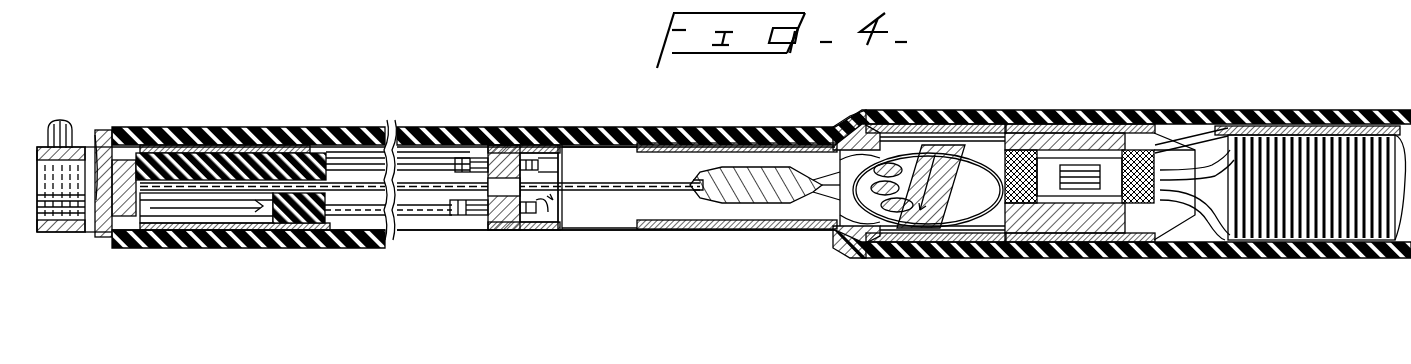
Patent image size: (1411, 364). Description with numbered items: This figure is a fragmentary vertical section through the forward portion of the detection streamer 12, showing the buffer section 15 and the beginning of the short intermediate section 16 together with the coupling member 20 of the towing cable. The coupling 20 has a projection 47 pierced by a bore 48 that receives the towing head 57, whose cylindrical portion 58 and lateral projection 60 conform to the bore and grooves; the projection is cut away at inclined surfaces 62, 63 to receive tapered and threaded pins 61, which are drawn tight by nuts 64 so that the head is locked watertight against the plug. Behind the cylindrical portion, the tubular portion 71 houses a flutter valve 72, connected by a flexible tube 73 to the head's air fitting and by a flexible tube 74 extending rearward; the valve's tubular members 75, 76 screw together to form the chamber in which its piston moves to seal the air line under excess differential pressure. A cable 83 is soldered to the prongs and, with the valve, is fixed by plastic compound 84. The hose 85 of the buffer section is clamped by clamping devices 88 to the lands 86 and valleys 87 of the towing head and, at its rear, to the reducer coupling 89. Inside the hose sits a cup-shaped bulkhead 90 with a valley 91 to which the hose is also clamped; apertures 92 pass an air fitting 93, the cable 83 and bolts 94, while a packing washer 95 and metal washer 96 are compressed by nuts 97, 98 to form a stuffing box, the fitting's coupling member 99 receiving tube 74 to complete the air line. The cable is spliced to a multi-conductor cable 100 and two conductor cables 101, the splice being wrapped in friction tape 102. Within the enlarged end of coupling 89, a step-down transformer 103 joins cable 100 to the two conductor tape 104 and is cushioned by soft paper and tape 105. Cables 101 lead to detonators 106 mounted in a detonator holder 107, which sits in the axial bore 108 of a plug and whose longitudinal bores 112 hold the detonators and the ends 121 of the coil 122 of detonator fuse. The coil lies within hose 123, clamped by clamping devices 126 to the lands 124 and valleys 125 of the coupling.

The detection streamer 12 is at (398, 250).
The buffer section 15 is at (568, 231).
The short intermediate section 16 is at (1352, 258).
The coupling member 20 is at (84, 234).
The projection 47 is at (44, 143).
The bore 48 is at (92, 130).
The towing head 57 is at (106, 130).
The cylindrical portion 58 is at (42, 147).
The projection 60 is at (52, 232).
The tapered and threaded pins 61 is at (60, 232).
The cut surface 62 is at (70, 232).
The cut surface 63 is at (78, 232).
The nuts 64 is at (64, 140).
The tubular portion 71 is at (268, 127).
The flutter valve 72 is at (262, 248).
The flexible tube 73 is at (125, 188).
The flexible tube 74 is at (352, 216).
The tubular member 75 is at (200, 248).
The tubular member 76 is at (232, 248).
The cable 83 is at (338, 183).
The plastic compound 84 is at (308, 127).
The hose 85 is at (306, 248).
The lands 86 is at (104, 132).
The valleys 87 is at (212, 127).
The clamping devices 88 is at (246, 127).
The reducer coupling 89 is at (840, 250).
The cup-shaped bulkhead 90 is at (556, 188).
The valley 91 is at (544, 158).
The apertures 92 is at (495, 145).
The air fitting 93 is at (486, 231).
The bolts 94 is at (556, 145).
The packing washer 95 is at (560, 231).
The metal washer 96 is at (526, 158).
The nut 97 is at (536, 231).
The nuts 98 is at (478, 158).
The coupling member 99 is at (462, 216).
The multi-conductor cable 100 is at (996, 243).
The two conductor cables 101 is at (836, 150).
The friction tape 102 is at (753, 127).
The step-down transformer 103 is at (962, 153).
The two conductor tape 104 is at (1012, 124).
The soft paper and tape 105 is at (930, 145).
The detonators 106 is at (1088, 158).
The detonator holder 107 is at (1082, 243).
The axial bore 108 is at (1126, 243).
The longitudinal bores 112 is at (1150, 222).
The ends of coil 121 is at (1205, 205).
The coil 122 is at (1398, 258).
The hose 123 is at (1298, 258).
The lands 124 is at (958, 243).
The valleys 125 is at (926, 243).
The clamping devices 126 is at (893, 124).